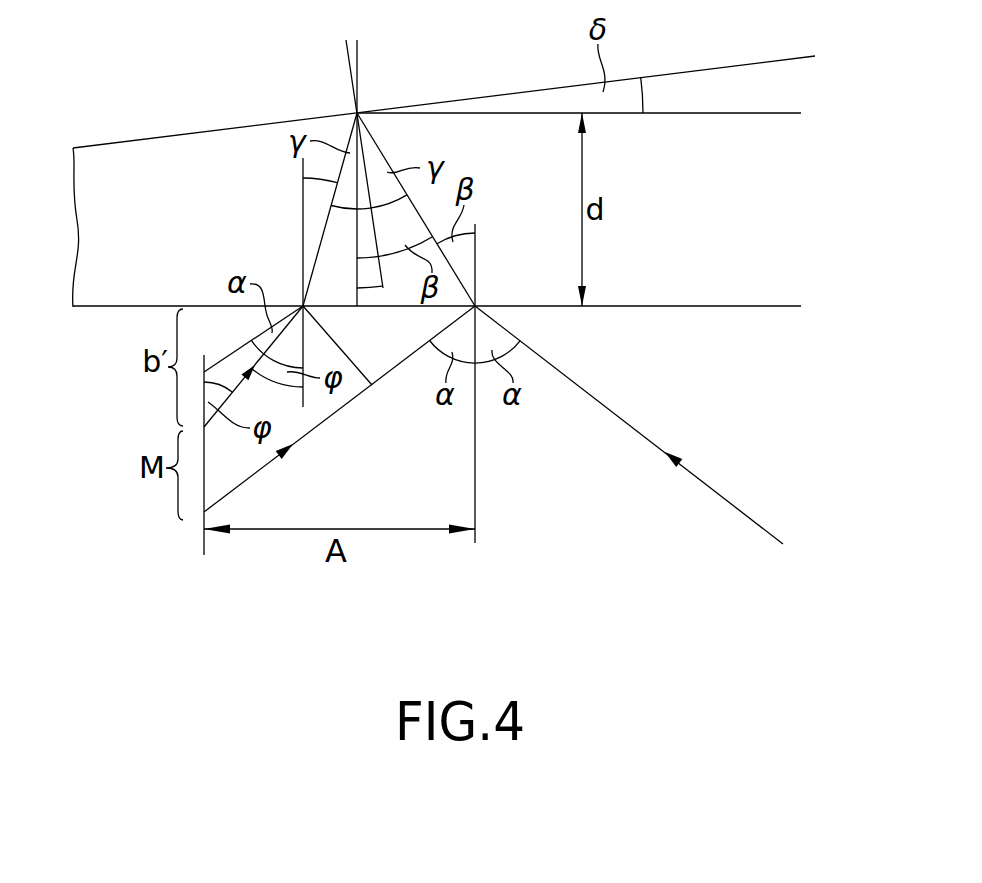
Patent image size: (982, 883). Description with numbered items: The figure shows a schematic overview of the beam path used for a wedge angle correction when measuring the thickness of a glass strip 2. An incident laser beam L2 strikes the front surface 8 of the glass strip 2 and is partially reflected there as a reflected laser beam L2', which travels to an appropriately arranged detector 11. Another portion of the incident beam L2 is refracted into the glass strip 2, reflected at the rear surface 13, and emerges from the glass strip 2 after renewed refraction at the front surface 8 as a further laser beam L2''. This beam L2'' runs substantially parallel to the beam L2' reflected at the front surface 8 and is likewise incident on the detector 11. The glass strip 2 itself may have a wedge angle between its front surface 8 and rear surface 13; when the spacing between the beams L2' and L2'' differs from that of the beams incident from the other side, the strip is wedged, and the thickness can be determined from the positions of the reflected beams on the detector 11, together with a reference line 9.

The glass strip 2 is at (118, 270).
The rear surface 13 is at (172, 150).
The front surface 8 is at (97, 308).
The normal / reference line at point of incidence 9 is at (475, 462).
The detector 11 is at (204, 546).
The incident beam L2 is at (636, 425).
The reflected laser beam L2' is at (339, 409).
The further laser beam L2'' is at (296, 375).